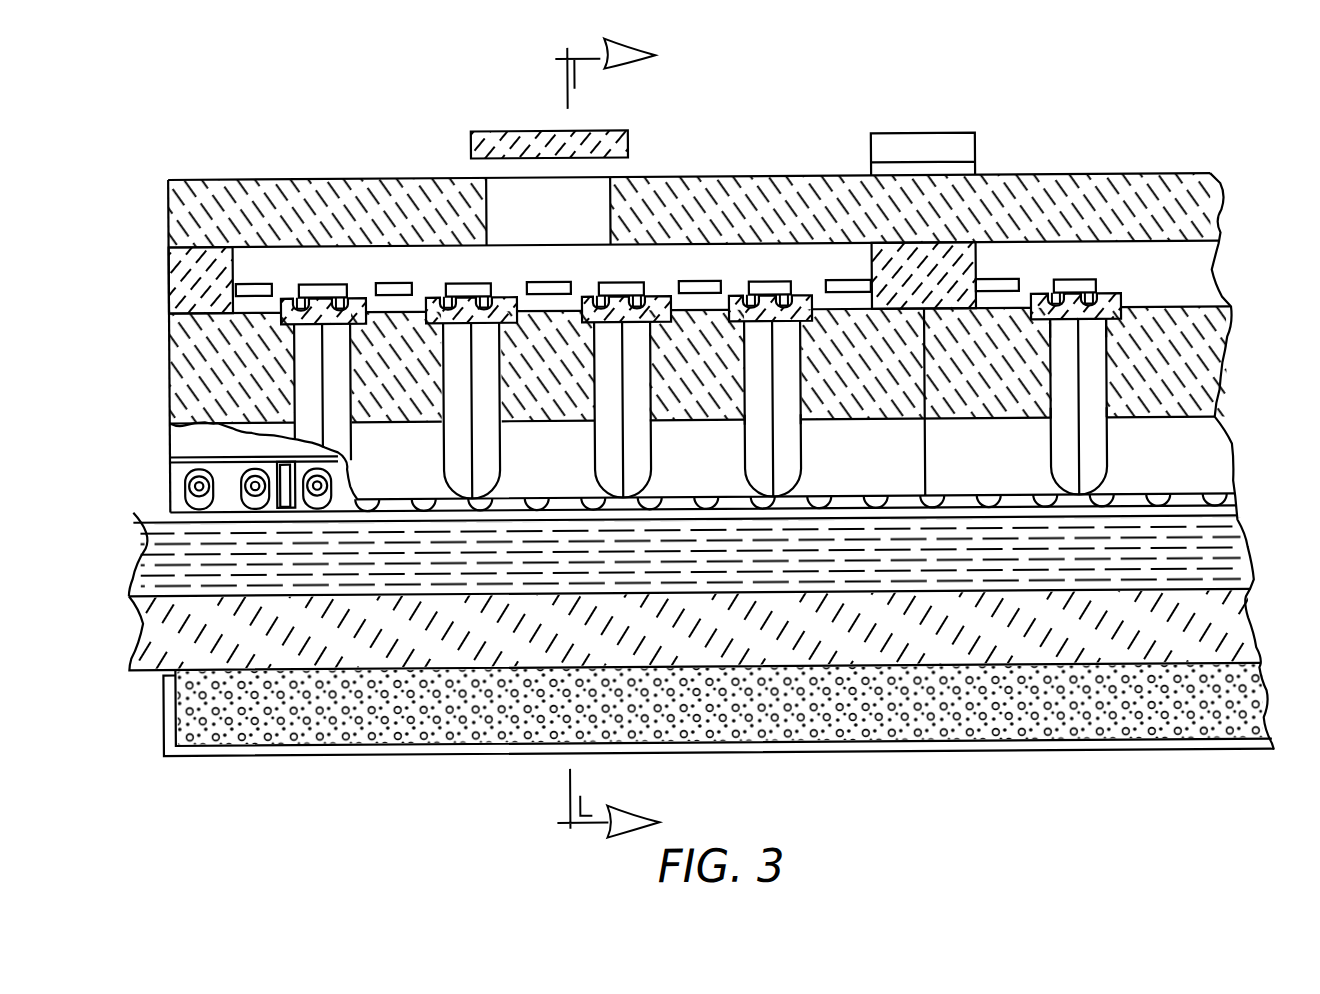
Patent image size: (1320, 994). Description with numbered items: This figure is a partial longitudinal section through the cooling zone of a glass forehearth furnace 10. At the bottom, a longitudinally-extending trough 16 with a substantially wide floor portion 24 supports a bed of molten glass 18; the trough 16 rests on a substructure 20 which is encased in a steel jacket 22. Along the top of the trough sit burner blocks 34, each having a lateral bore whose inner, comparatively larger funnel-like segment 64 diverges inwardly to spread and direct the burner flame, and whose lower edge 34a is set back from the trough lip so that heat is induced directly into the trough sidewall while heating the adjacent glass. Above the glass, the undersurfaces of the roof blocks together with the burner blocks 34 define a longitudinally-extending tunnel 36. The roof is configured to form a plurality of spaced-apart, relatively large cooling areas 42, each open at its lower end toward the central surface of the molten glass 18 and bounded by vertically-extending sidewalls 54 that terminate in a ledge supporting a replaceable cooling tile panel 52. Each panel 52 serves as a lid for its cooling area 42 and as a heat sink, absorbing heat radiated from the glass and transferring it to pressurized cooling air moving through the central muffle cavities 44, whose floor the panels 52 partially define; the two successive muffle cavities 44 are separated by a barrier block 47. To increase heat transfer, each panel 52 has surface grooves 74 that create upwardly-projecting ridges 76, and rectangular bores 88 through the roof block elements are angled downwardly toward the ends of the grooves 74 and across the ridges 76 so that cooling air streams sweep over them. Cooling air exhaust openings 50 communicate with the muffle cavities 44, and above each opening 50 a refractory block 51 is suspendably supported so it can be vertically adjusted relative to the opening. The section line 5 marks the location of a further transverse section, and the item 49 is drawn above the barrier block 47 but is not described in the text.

The section line 5- 5 is at (588, 441).
The glass forehearth furnace 10 is at (482, 772).
The trough 16 is at (695, 630).
The molten glass 18 is at (689, 550).
The substructure 20 is at (723, 704).
The steel jacket 22 is at (860, 747).
The floor portion 24 is at (1218, 592).
The burner block 34 is at (181, 474).
The lower edge of burner block bottom 34a is at (188, 503).
The tunnel 36 is at (866, 476).
The cooling area 42 is at (799, 405).
The muffle cavity 44 is at (676, 273).
The barrier block 47 is at (907, 268).
The connector block 49 is at (960, 133).
The cooling air exhaust opening 50 is at (543, 163).
The refractory block 51 is at (630, 146).
The cooling tile panel 52 is at (1073, 324).
The sidewall 54 is at (802, 421).
The funnel-like bore segment 64 is at (193, 495).
The surface groove 74 is at (347, 302).
The ridge 76 is at (281, 295).
The bore 88 is at (552, 283).